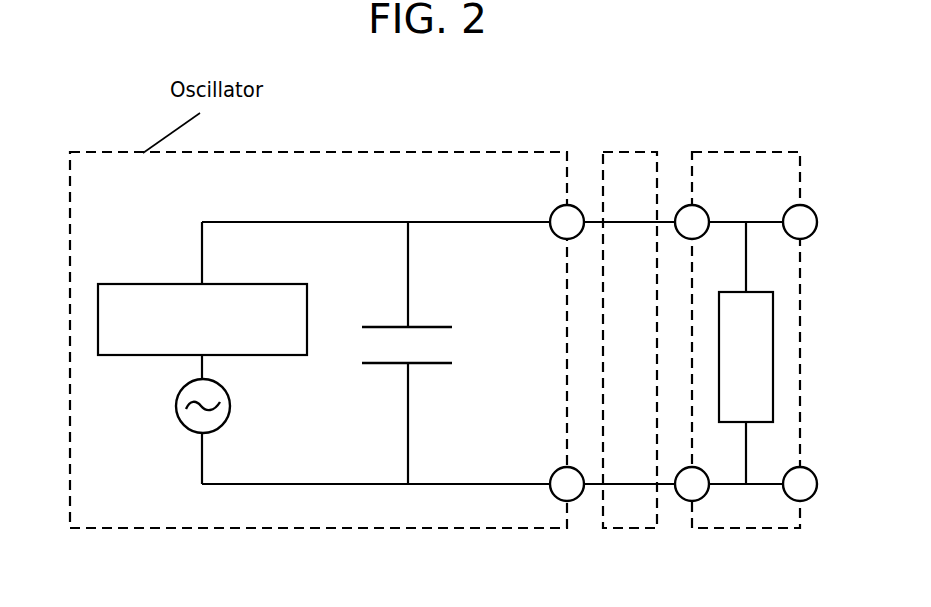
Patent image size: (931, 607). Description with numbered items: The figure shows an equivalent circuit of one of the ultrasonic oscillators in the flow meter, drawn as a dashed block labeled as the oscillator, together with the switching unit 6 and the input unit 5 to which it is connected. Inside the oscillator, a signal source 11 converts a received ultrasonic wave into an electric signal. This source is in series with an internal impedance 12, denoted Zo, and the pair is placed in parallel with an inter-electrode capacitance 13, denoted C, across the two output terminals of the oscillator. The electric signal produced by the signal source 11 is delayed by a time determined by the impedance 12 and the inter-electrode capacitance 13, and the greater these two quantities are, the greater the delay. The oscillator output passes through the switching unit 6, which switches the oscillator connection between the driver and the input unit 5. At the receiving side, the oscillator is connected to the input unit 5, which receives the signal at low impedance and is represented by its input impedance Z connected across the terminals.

The input unit 5 is at (712, 151).
The switching unit 6 is at (630, 151).
The signal source 11 is at (177, 423).
The internal impedance 12 is at (98, 313).
The inter-electrode capacitance 13 is at (434, 371).